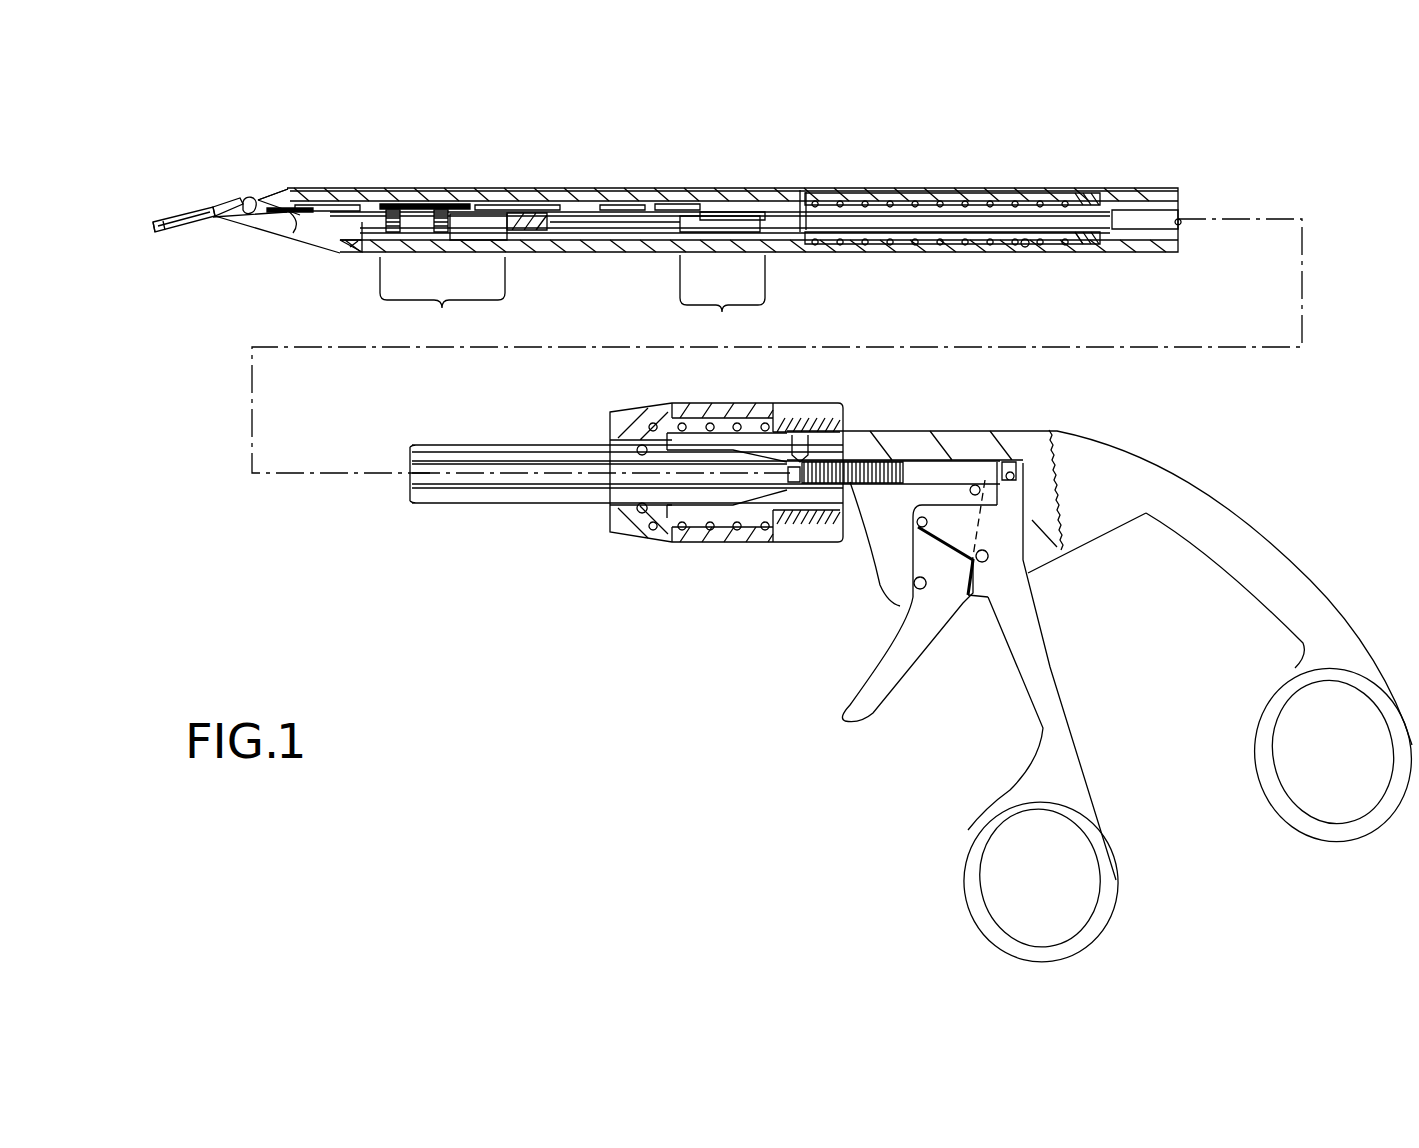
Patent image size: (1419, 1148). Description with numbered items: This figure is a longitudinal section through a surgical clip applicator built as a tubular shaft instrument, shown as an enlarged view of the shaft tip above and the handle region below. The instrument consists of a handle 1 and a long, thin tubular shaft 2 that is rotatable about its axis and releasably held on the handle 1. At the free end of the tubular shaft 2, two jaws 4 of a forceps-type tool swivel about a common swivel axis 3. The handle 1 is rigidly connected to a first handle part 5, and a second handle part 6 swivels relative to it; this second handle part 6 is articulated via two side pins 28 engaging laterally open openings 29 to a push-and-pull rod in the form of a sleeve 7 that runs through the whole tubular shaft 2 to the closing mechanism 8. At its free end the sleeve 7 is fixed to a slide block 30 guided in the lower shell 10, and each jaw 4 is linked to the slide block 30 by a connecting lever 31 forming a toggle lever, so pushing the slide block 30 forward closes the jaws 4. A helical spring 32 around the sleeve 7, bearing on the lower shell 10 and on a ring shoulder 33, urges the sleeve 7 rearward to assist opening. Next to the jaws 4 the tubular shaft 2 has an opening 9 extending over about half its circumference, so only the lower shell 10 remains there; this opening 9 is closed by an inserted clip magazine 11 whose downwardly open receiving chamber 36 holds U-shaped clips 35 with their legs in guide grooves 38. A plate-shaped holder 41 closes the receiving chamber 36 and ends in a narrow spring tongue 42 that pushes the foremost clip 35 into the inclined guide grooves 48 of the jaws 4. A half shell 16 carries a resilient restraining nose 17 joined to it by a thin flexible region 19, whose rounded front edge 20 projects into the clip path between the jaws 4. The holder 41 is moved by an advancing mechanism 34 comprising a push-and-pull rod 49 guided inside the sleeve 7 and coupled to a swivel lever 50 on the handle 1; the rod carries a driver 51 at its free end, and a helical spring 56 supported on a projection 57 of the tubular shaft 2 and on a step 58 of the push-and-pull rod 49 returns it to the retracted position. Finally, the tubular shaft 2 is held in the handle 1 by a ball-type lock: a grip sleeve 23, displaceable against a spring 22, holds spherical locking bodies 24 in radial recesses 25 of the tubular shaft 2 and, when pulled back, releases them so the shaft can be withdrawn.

The handle 1 is at (1245, 497).
The tubular shaft 2 is at (925, 250).
The swivel axis 3 is at (362, 250).
The jaws 4 is at (240, 222).
The first handle part 5 is at (1300, 565).
The second handle part 6 is at (1058, 710).
The sleeve 7 is at (1158, 190).
The closing mechanism 8 is at (442, 302).
The opening 9 is at (287, 213).
The lower shell 10 is at (712, 232).
The clip magazine 11 is at (627, 200).
The half shell 16 is at (445, 200).
The restraining nose 17 is at (225, 203).
The flexible region 19 is at (248, 198).
The front edge 20 is at (212, 219).
The spring 22 is at (730, 527).
The grip sleeve 23 is at (825, 545).
The spherical locking bodies 24 is at (637, 445).
The radial recesses 25 is at (637, 508).
The side pins 28 is at (1052, 470).
The openings 29 is at (1012, 475).
The slide block 30 is at (505, 236).
The connecting lever 31 is at (427, 246).
The helical spring 32 is at (1035, 242).
The ring shoulder 33 is at (1085, 242).
The advancing mechanism 34 is at (722, 301).
The clips 35 is at (500, 200).
The receiving chamber 36 is at (660, 205).
The guide grooves 38 is at (355, 200).
The holder 41 is at (632, 218).
The spring tongue 42 is at (318, 195).
The guide grooves 48 is at (160, 220).
The push-and-pull rod 49 is at (820, 252).
The swivel lever 50 is at (862, 710).
The driver 51 is at (735, 205).
The helical spring 56 is at (930, 205).
The projection 57 is at (800, 192).
The step 58 is at (1095, 212).